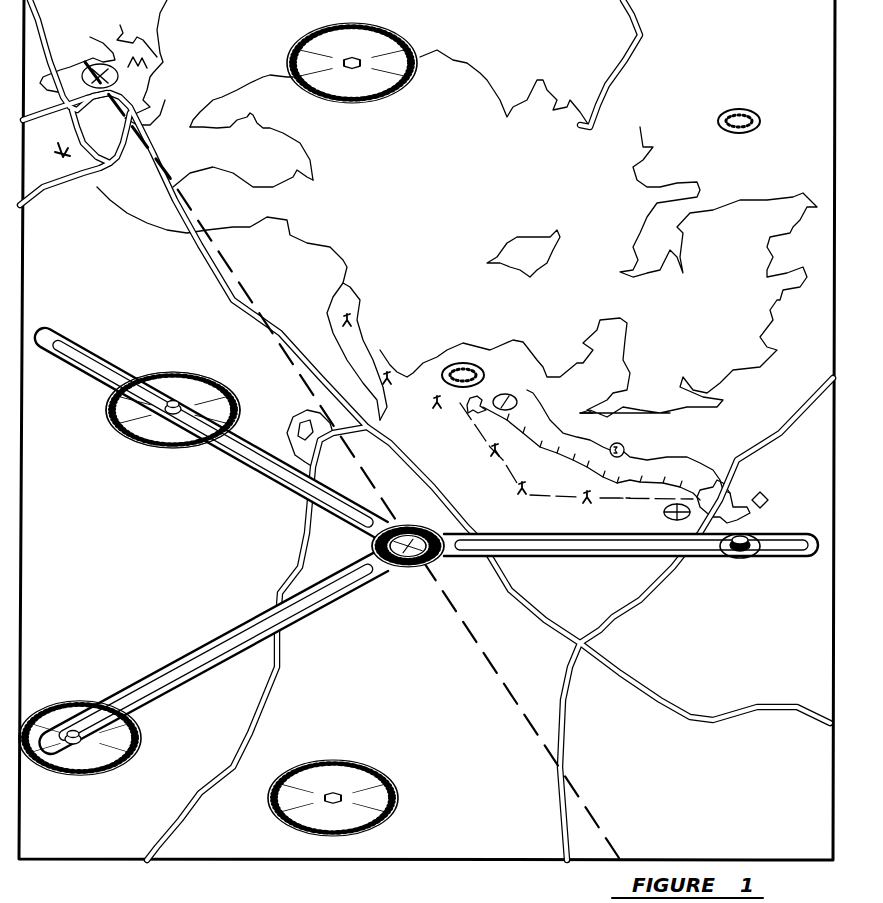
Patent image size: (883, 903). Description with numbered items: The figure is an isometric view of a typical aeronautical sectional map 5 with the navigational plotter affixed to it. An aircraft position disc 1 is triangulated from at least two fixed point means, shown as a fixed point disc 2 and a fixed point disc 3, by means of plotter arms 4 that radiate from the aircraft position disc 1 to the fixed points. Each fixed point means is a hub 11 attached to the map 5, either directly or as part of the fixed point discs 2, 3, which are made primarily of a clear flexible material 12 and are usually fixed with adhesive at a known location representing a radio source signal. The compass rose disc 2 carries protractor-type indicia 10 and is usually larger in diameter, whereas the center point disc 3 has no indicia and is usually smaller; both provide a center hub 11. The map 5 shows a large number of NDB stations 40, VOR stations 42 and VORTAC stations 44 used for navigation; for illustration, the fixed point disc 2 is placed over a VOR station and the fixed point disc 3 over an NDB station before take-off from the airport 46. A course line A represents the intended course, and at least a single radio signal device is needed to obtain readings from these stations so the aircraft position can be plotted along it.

The aircraft position disc 1 is at (409, 570).
The fixed point disc 2 is at (77, 699).
The fixed point disc 3 is at (736, 560).
The plotter arms 4 is at (266, 479).
The aeronautical map 5 is at (419, 762).
The protractor-type indicia 10 is at (118, 430).
The hub 11 is at (177, 404).
The clear flexible material 12 is at (161, 447).
The NDB stations 40 is at (723, 82).
The VOR stations 42 is at (353, 60).
The VORTAC stations 44 is at (334, 787).
The airport 46 is at (88, 68).
The course line A is at (487, 653).